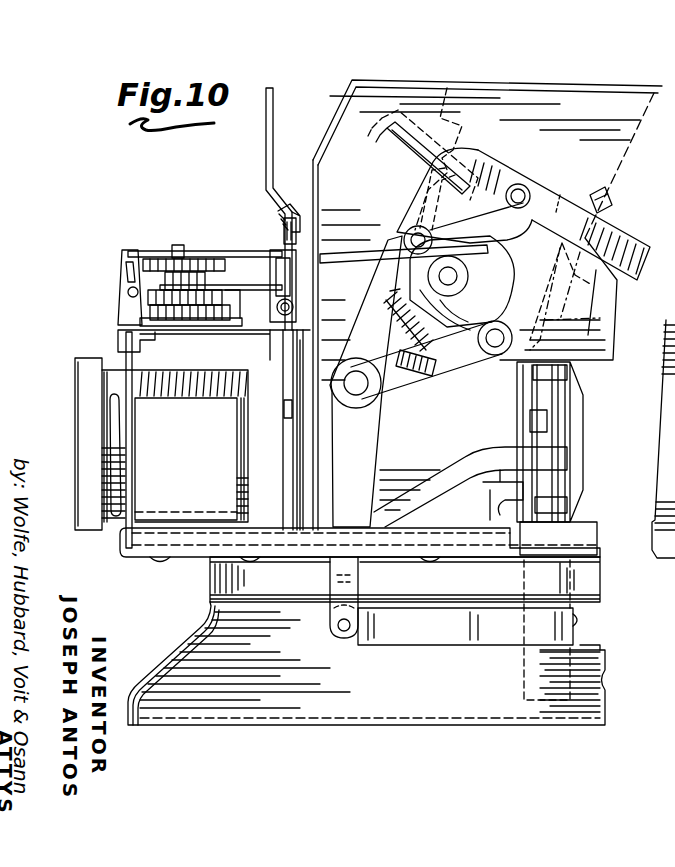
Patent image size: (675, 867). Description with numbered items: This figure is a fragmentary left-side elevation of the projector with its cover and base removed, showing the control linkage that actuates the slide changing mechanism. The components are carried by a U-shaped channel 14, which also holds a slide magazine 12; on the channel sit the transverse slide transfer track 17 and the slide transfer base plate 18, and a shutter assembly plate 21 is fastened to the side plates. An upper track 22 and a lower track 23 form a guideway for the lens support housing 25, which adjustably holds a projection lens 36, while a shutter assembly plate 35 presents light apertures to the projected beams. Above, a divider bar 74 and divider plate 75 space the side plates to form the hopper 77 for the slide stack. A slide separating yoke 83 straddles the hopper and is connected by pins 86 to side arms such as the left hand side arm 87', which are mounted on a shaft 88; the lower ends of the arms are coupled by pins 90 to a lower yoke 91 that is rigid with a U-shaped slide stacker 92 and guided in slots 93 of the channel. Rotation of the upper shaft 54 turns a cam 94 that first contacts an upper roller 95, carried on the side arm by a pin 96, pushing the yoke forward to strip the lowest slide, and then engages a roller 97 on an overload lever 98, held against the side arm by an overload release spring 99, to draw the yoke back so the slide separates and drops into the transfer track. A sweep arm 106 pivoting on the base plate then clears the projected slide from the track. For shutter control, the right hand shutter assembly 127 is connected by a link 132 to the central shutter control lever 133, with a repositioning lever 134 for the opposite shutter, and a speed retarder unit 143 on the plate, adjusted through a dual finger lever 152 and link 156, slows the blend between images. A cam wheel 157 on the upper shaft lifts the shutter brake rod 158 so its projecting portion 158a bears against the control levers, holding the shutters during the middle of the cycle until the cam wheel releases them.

The slide magazine 12 is at (64, 450).
The U-shaped channel 14 is at (605, 668).
The slide transfer track 17 is at (586, 472).
The slide transfer base plate 18 is at (202, 562).
The shutter assembly plate 21 is at (212, 338).
The upper track 22 is at (118, 338).
The lower track 23 is at (134, 553).
The lens support housing 25 is at (133, 486).
The shutter assembly plate 35 is at (330, 448).
The projection lens 36 is at (74, 378).
The upper shaft 54 is at (450, 277).
The divider bar 74 is at (615, 291).
The divider plate 75 is at (603, 318).
The hopper 77 is at (584, 131).
The slide separating yoke 83 is at (616, 232).
The pins 86 is at (520, 188).
The side arm 87' is at (471, 204).
The shaft 88 is at (370, 420).
The pins 90 is at (344, 634).
The lower yoke 91 is at (442, 645).
The slide stacker 92 is at (522, 672).
The slots 93 is at (578, 650).
The cam 94 is at (514, 300).
The upper roller 95 is at (424, 232).
The pin 96 is at (412, 232).
The roller 97 is at (506, 340).
The overload lever 98 is at (392, 398).
The overload release spring 99 is at (394, 328).
The sweep arm 106 is at (445, 490).
The shutter assembly 127 is at (284, 412).
The link 132 is at (282, 356).
The shutter control lever 133 is at (267, 128).
The repositioning lever 134 is at (282, 217).
The speed retarder unit 143 is at (162, 312).
The dual finger lever 152 is at (128, 270).
The link 156 is at (233, 250).
The cam wheel 157 is at (325, 277).
The shutter brake rod 158 is at (350, 245).
The projecting portion 158a is at (328, 240).